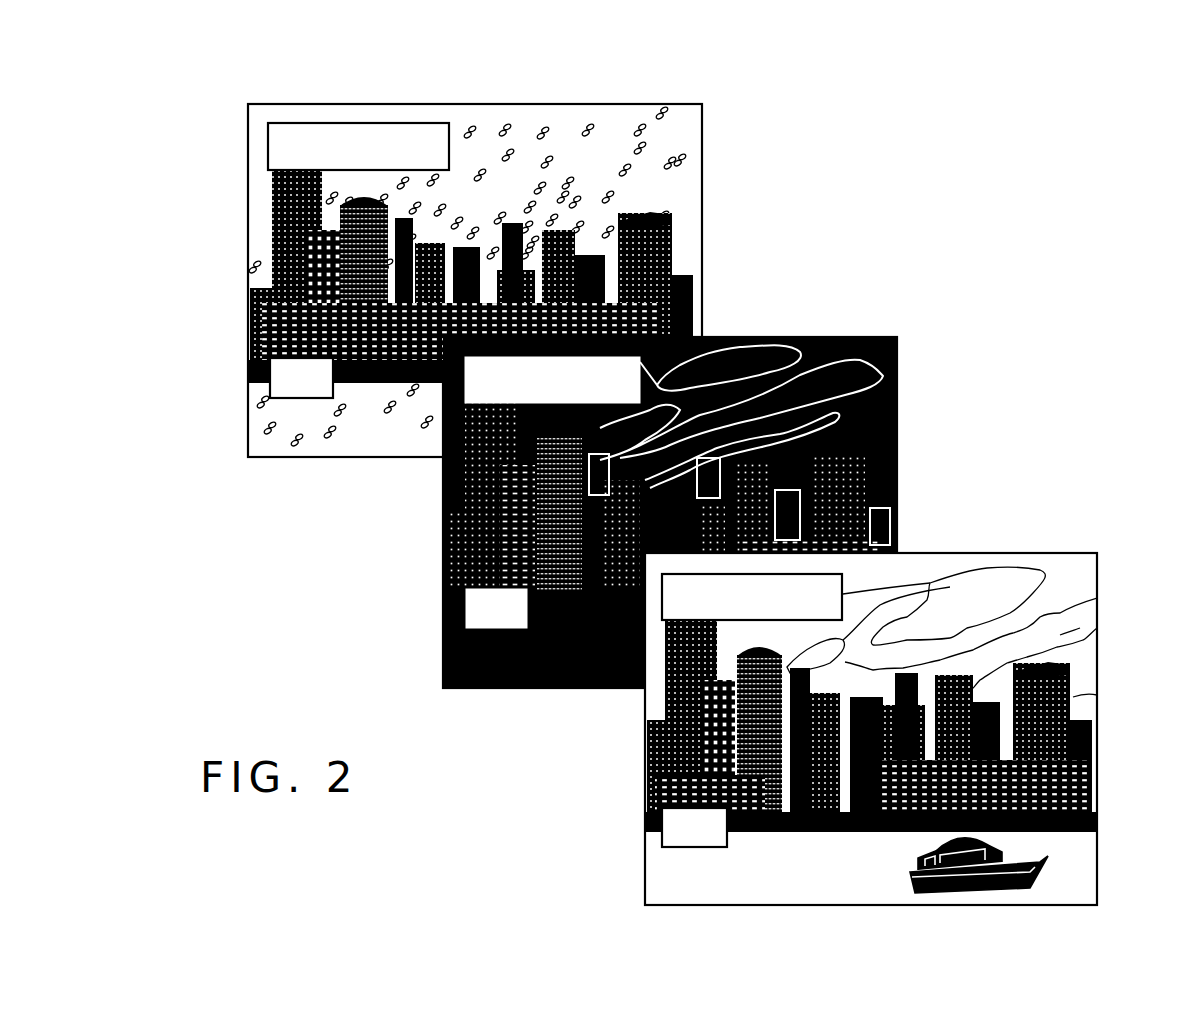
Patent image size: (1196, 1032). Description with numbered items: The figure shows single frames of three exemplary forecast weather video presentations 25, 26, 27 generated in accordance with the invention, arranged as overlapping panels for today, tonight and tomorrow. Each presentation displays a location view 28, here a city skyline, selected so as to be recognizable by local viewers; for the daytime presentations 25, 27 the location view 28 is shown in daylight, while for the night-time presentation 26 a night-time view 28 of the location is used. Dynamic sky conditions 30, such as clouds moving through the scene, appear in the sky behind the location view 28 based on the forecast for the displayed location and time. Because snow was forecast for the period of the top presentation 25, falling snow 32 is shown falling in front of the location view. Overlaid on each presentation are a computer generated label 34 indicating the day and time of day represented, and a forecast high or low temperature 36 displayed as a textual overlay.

The forecast weather video presentation 25 is at (705, 216).
The forecast weather video presentation 26 is at (898, 430).
The forecast weather video presentation 27 is at (1036, 553).
The location view 28 is at (672, 255).
The dynamic sky conditions 30 is at (684, 158).
The falling snow 32 is at (664, 112).
The label 34 is at (312, 126).
The temperature 36 is at (295, 392).